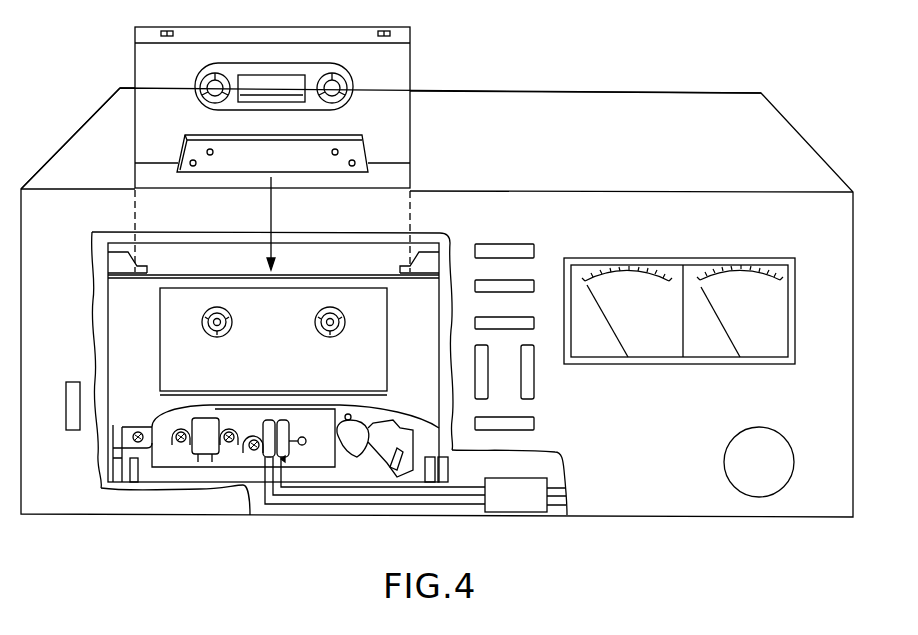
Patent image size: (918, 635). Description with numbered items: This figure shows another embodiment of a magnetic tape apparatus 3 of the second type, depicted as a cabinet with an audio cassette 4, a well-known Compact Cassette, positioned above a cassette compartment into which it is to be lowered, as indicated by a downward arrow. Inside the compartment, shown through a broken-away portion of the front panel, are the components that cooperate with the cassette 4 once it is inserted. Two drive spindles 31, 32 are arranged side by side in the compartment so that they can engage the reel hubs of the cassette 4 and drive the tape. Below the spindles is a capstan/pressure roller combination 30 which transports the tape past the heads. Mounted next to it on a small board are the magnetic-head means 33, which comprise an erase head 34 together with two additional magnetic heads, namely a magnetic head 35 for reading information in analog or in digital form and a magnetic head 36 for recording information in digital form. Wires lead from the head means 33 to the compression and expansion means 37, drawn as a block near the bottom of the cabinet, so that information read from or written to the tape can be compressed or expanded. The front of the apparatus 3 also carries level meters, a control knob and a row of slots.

The apparatus 3 is at (824, 151).
The audio cassette 4 is at (277, 25).
The capstan/pressure roller combination 30 is at (363, 421).
The drive spindle 31 is at (222, 338).
The drive spindle 32 is at (334, 338).
The magnetic-head means 33 is at (238, 451).
The erase head 34 is at (197, 458).
The magnetic head 35 is at (268, 424).
The magnetic head 36 is at (286, 428).
The compression and expansion means 37 is at (527, 506).